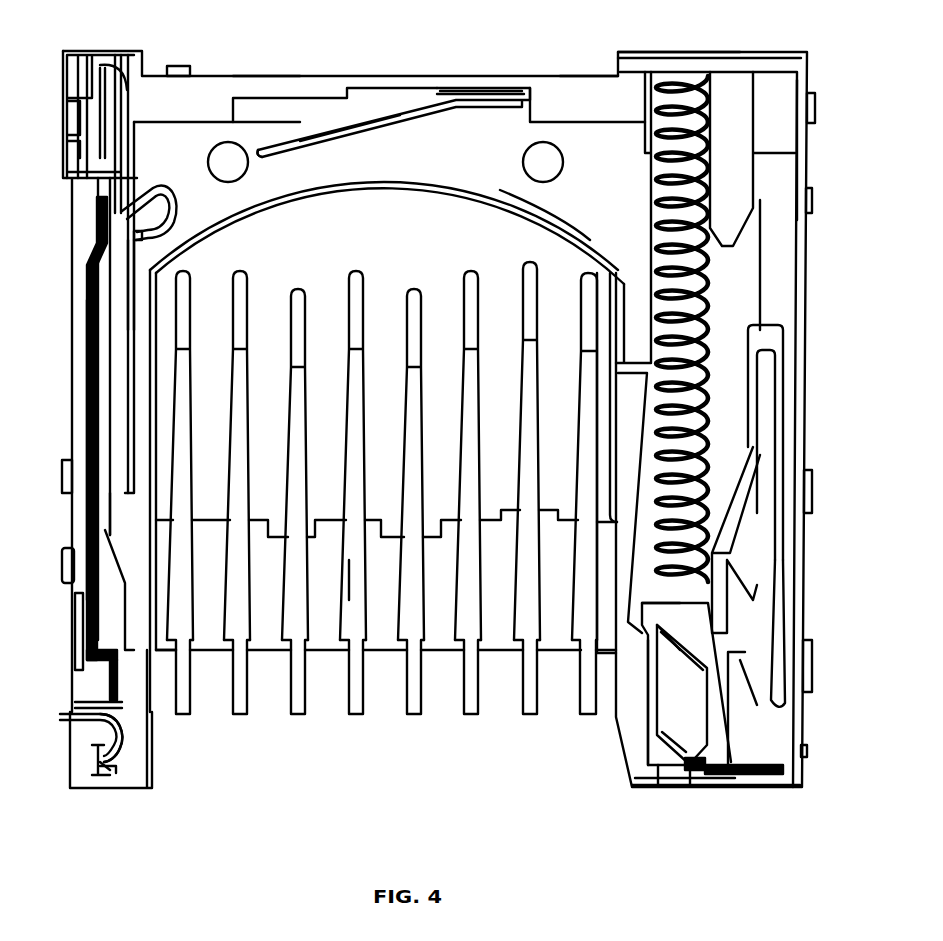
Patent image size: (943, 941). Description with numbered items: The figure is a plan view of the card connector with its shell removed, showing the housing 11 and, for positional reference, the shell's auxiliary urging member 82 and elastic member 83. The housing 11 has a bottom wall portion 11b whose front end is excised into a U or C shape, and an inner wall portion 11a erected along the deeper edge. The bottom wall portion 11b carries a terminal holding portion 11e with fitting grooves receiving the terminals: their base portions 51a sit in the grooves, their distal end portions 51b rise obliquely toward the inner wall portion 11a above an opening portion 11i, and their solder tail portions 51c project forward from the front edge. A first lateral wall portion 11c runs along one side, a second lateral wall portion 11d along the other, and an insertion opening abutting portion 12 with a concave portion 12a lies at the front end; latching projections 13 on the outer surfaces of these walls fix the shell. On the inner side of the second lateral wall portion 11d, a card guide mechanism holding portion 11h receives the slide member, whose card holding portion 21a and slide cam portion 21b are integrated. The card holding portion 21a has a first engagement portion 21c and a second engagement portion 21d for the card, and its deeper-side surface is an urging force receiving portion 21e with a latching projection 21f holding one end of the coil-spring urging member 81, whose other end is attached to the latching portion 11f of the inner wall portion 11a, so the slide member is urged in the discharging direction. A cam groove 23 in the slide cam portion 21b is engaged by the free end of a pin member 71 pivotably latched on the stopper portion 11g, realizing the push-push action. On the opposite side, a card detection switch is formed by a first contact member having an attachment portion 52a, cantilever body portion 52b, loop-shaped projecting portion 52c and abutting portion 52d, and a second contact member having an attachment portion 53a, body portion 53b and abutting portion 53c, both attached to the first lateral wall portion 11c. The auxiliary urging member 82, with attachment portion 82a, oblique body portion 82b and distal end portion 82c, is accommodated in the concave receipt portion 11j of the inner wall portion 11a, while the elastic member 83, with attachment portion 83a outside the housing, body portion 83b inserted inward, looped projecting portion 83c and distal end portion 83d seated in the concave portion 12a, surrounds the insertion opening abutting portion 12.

The housing 11 is at (88, 50).
The inner wall portion 11a is at (262, 82).
The bottom wall portion 11b is at (580, 133).
The first lateral wall portion 11c is at (72, 395).
The second lateral wall portion 11d is at (800, 183).
The terminal holding portion 11e is at (327, 652).
The latching portion 11f is at (672, 70).
The stopper portion 11g is at (770, 778).
The card guide mechanism holding portion 11h is at (770, 248).
The opening portion 11i is at (545, 243).
The concave receipt portion 11j is at (300, 118).
The insertion opening abutting portion 12 is at (75, 760).
The concave portion 12a is at (103, 780).
The latching projections 13 is at (178, 66).
The card holding portion 21a is at (722, 735).
The slide cam portion 21b is at (775, 342).
The first engagement portion 21c is at (685, 632).
The second engagement portion 21d is at (703, 790).
The urging force receiving portion 21e is at (682, 607).
The latching projection 21f is at (650, 592).
The cam groove 23 is at (700, 483).
The base portions 51a is at (367, 612).
The distal end portions 51b is at (358, 272).
The solder tail portions 51c is at (357, 640).
The attachment portion 52a is at (110, 190).
The body portion 52b is at (110, 358).
The projecting portion 52c is at (180, 208).
The abutting portion 52d is at (137, 193).
The attachment portion 53a is at (75, 615).
The body portion 53b is at (90, 278).
The abutting portion 53c is at (97, 225).
The pin member 71 is at (770, 550).
The urging member 81 is at (706, 294).
The auxiliary urging member 82 is at (372, 115).
The attachment portion 82a is at (480, 102).
The body portion 82b is at (357, 128).
The distal end portion 82c is at (270, 152).
The elastic member 83 is at (62, 720).
The attachment portion 83a is at (62, 708).
The body portion 83b is at (107, 720).
The projecting portion 83c is at (123, 743).
The distal end portion 83d is at (122, 763).